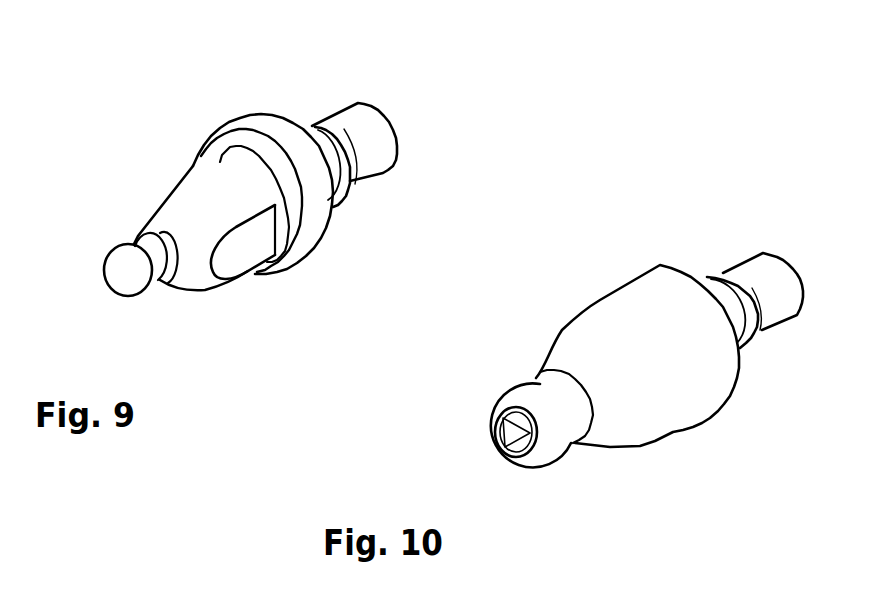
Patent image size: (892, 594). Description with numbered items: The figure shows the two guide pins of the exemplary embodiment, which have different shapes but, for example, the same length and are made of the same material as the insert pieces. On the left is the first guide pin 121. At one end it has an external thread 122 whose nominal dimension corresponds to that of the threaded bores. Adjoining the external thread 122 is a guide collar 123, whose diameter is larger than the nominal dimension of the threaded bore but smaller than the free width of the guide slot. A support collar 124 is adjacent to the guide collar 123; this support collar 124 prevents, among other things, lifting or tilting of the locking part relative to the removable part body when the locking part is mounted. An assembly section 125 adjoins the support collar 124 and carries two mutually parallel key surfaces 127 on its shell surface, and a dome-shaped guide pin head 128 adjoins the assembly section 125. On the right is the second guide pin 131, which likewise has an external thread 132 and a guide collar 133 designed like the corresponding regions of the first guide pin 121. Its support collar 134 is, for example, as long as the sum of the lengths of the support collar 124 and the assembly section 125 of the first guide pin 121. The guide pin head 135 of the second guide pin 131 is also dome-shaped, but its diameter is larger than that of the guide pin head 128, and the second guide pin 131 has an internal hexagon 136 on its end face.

In FIG. 9, the first guide pin 121 is at (208, 308).
In FIG. 9, the external thread 122 is at (343, 127).
In FIG. 9, the guide collar 123 is at (300, 130).
In FIG. 9, the support collar 124 is at (249, 133).
In FIG. 9, the assembly section 125 is at (165, 200).
In FIG. 9, the key surfaces 127 is at (240, 250).
In FIG. 9, the guide pin head 128 is at (128, 273).
In FIG. 10, the second guide pin 131 is at (681, 456).
In FIG. 10, the external thread 132 is at (741, 276).
In FIG. 10, the guide collar 133 is at (714, 287).
In FIG. 10, the support collar 134 is at (600, 318).
In FIG. 10, the guide pin head 135 is at (555, 432).
In FIG. 10, the internal hexagon 136 is at (518, 446).